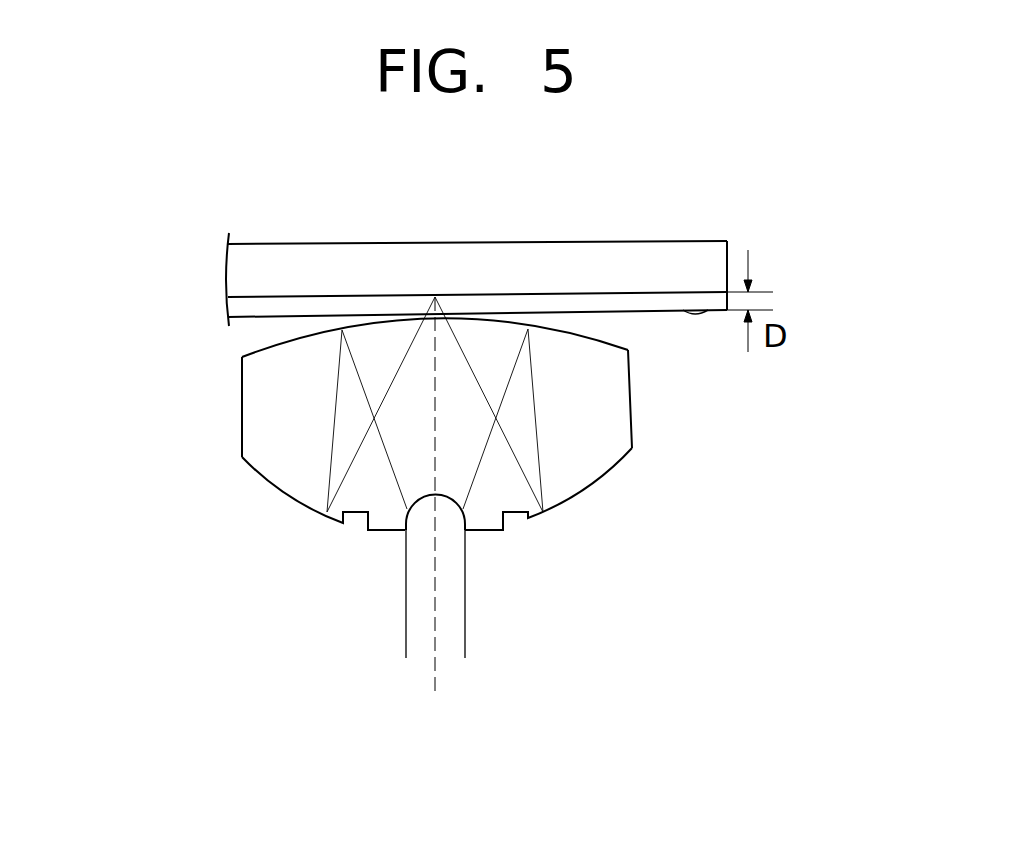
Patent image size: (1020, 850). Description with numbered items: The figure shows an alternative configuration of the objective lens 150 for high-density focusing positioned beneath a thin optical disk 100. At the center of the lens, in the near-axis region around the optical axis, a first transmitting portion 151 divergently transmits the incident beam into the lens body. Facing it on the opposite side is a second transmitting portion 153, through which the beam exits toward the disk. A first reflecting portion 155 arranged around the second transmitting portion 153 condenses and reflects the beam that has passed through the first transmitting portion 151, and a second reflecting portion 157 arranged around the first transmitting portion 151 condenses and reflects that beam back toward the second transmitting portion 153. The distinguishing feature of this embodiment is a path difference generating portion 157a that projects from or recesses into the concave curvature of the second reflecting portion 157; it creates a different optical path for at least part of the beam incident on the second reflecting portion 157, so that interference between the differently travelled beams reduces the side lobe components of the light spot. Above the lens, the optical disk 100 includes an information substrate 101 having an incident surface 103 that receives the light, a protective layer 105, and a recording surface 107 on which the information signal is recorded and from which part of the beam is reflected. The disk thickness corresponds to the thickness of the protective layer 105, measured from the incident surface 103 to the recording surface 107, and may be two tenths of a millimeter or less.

The optical disk 100 is at (288, 220).
The information substrate 101 is at (862, 186).
The incident surface 103 is at (713, 307).
The protective layer 105 is at (683, 298).
The recording surface 107 is at (680, 291).
The objective lens 150 is at (248, 492).
The first transmitting portion 151 is at (409, 508).
The second transmitting portion 153 is at (448, 307).
The first reflecting portion 155 is at (602, 341).
The second reflecting portion 157 is at (587, 493).
The path difference generating portion 157a is at (510, 515).